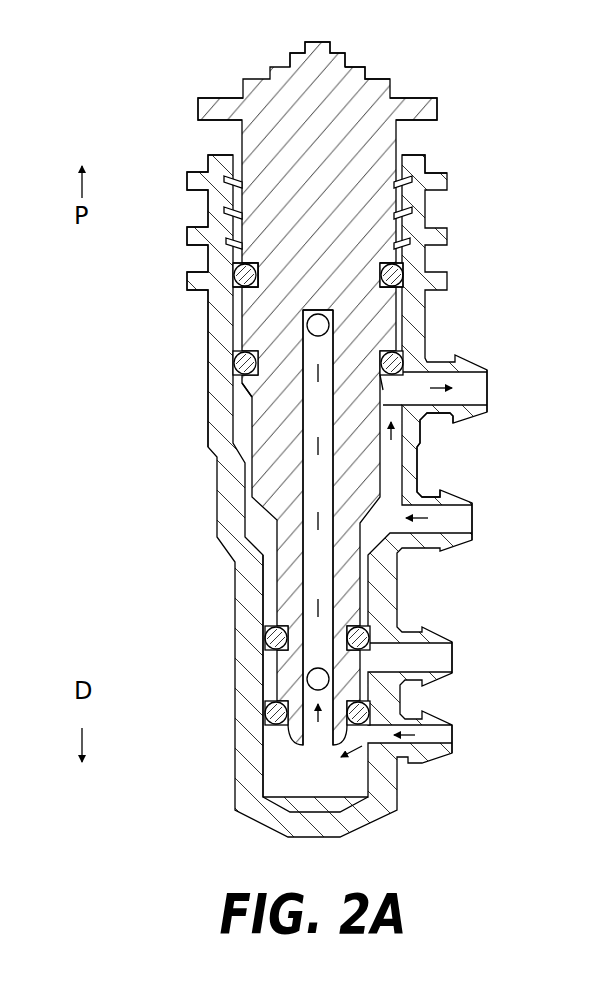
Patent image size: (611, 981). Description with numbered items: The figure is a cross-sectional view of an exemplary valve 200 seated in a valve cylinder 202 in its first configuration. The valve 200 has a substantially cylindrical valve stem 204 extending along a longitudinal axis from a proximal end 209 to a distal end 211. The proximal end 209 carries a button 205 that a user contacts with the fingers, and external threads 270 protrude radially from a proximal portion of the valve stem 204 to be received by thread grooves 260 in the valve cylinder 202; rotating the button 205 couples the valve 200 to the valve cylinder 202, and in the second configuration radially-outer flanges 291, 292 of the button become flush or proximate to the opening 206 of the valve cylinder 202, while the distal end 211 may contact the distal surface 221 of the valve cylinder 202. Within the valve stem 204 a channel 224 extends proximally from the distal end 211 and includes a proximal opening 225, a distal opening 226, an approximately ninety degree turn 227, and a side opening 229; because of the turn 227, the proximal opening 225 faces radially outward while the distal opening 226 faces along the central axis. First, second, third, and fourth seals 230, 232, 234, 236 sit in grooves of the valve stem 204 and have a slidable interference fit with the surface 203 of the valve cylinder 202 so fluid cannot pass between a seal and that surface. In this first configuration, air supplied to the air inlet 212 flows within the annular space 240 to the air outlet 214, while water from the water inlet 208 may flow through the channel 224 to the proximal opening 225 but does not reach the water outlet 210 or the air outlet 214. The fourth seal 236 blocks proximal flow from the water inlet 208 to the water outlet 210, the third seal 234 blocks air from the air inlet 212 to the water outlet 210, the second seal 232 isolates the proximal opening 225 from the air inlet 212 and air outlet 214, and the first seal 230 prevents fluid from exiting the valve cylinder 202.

The valve 200 is at (140, 93).
The valve cylinder 202 is at (235, 545).
The surface of valve cylinder 203 is at (229, 342).
The valve stem 204 is at (272, 490).
The button 205 is at (290, 80).
The opening of valve cylinder 206 is at (430, 158).
The water inlet 208 is at (445, 735).
The proximal end of valve stem 209 is at (342, 86).
The water outlet 210 is at (440, 658).
The distal end of valve stem 211 is at (270, 670).
The air inlet 212 is at (470, 518).
The air outlet 214 is at (476, 388).
The distal surface of valve cylinder 221 is at (342, 822).
The channel 224 is at (303, 400).
The proximal opening 225 is at (330, 322).
The distal opening 226 is at (318, 740).
The turn 227 is at (304, 325).
The side opening 229 is at (306, 680).
The first seal 230 is at (240, 280).
The second seal 232 is at (242, 366).
The third seal 234 is at (268, 633).
The fourth seal 236 is at (268, 716).
The annular space 240 is at (440, 493).
The thread grooves 260 is at (240, 272).
The external threads 270 is at (230, 180).
The flange 291 is at (198, 110).
The flange 292 is at (426, 104).